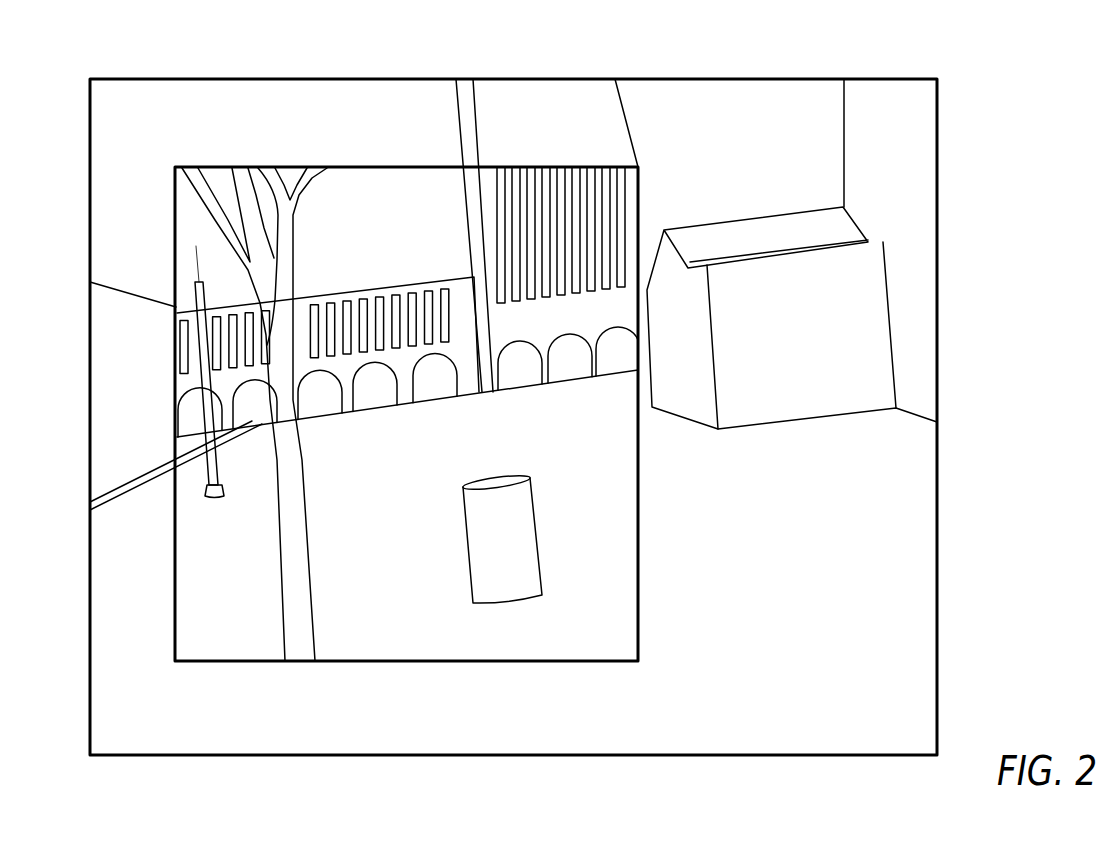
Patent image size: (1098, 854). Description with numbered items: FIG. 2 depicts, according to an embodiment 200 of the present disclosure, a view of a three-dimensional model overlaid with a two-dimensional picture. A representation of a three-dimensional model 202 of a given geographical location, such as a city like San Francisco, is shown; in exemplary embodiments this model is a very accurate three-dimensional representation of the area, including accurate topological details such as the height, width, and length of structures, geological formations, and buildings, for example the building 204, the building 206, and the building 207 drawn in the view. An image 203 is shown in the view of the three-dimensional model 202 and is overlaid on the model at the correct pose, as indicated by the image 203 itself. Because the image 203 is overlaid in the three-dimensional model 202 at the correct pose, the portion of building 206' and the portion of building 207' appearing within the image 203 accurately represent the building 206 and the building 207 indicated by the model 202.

The embodiment 200 is at (866, 60).
The three-dimensional model 202 is at (832, 296).
The image 203 is at (330, 433).
The building 204 is at (873, 345).
The building 206 is at (650, 211).
The portion of building 206' is at (502, 167).
The building 207 is at (145, 396).
The portion of building 207' is at (330, 357).